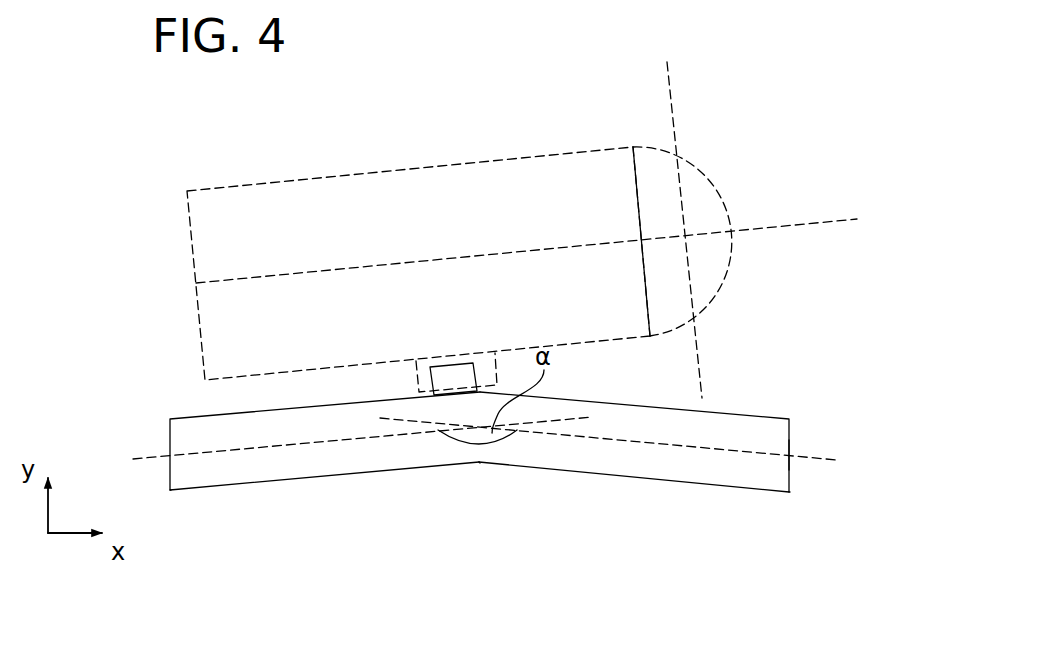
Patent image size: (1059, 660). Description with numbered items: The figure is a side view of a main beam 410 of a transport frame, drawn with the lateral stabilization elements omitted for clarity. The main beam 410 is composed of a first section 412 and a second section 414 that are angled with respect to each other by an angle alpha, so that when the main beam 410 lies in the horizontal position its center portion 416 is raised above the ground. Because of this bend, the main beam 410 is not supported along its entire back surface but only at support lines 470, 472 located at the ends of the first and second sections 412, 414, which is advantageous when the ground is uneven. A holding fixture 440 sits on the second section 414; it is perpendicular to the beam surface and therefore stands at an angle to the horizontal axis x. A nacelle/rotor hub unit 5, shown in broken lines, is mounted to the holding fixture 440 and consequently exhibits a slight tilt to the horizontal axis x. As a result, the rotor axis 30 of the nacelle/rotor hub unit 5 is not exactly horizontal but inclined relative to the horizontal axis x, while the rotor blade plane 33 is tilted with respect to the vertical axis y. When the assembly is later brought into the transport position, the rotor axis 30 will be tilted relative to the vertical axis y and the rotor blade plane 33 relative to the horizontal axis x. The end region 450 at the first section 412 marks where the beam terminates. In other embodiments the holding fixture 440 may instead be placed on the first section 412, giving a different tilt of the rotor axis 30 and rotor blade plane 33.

The nacelle/rotor hub unit 5 is at (420, 167).
The rotor axis 30 is at (778, 227).
The rotor blade plane 33 is at (673, 118).
The main beam 410 is at (130, 338).
The first section 412 is at (747, 428).
The second section 414 is at (187, 432).
The center portion 416 is at (483, 488).
The holding fixture 440 is at (458, 363).
The plate end 450 is at (808, 446).
The support line 470 is at (787, 514).
The support line 472 is at (176, 510).